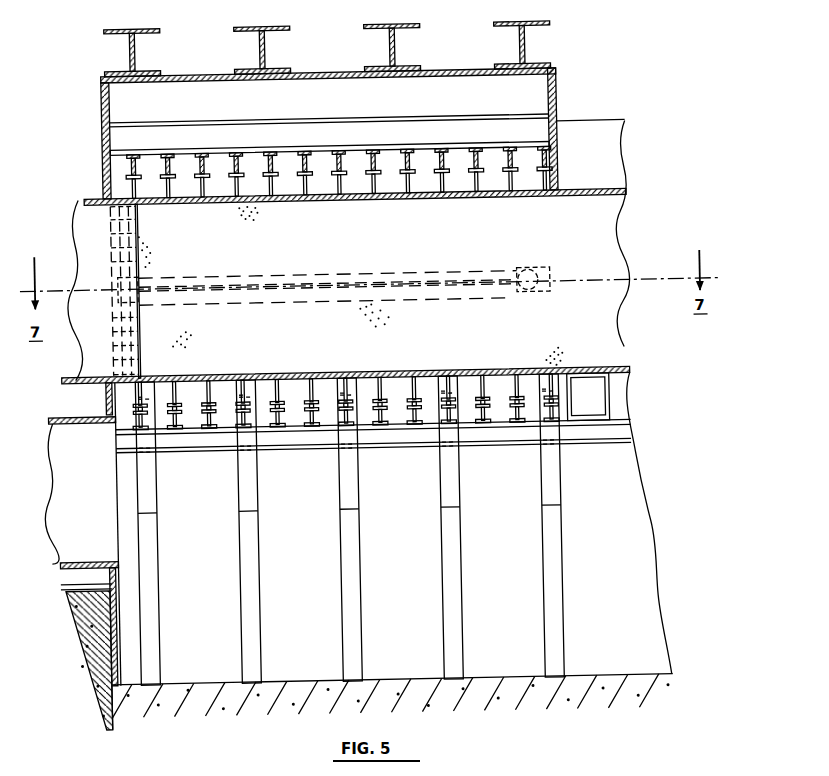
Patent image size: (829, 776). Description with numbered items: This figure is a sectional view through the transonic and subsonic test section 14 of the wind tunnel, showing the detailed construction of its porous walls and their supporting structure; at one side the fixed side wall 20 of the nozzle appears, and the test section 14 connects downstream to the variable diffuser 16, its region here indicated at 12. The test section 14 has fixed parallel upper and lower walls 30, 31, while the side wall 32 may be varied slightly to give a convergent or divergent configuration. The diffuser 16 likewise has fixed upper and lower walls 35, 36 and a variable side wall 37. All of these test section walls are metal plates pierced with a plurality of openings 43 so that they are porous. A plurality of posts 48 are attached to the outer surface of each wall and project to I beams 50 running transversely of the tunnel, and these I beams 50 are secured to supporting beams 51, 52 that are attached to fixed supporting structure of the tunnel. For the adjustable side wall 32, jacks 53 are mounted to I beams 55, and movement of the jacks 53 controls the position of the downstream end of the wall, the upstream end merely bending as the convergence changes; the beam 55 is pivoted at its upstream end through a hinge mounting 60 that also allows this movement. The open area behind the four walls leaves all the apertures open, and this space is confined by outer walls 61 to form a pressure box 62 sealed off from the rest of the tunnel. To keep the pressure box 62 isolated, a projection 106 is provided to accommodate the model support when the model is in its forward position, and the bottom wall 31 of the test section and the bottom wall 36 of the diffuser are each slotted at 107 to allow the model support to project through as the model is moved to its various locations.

The pier structure 12 is at (96, 192).
The transonic and subsonic test section 14 is at (563, 192).
The variable diffuser 16 is at (642, 199).
The side wall 20 is at (90, 228).
The upper wall 30 is at (197, 199).
The lower wall 31 is at (451, 370).
The side wall 32 is at (315, 234).
The upper wall 35 is at (600, 200).
The lower wall 36 is at (597, 362).
The side wall 37 is at (598, 270).
The openings 43 is at (244, 214).
The posts 48 is at (365, 194).
The I beams 50 is at (342, 152).
The supporting beam 51 is at (204, 138).
The supporting beam 52 is at (198, 440).
The jacks 53 is at (525, 270).
The I beams 55 is at (303, 302).
The hinge mounting 60 is at (117, 297).
The outer walls 61 is at (460, 70).
The pressure box 62 is at (336, 98).
The projection 106 is at (104, 404).
The slot 107 is at (284, 375).